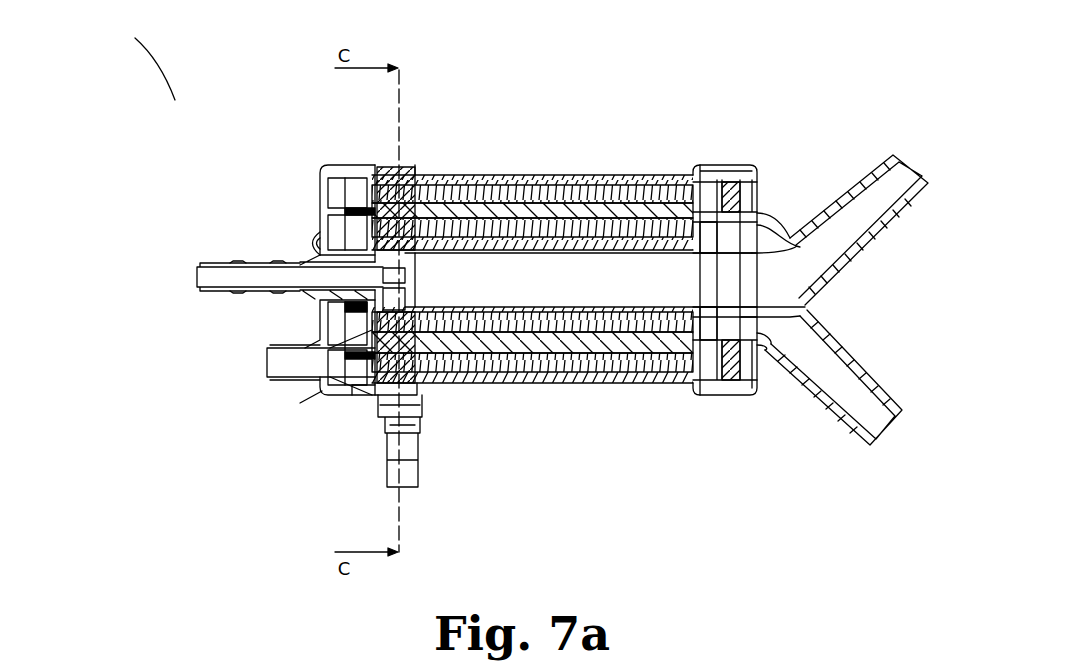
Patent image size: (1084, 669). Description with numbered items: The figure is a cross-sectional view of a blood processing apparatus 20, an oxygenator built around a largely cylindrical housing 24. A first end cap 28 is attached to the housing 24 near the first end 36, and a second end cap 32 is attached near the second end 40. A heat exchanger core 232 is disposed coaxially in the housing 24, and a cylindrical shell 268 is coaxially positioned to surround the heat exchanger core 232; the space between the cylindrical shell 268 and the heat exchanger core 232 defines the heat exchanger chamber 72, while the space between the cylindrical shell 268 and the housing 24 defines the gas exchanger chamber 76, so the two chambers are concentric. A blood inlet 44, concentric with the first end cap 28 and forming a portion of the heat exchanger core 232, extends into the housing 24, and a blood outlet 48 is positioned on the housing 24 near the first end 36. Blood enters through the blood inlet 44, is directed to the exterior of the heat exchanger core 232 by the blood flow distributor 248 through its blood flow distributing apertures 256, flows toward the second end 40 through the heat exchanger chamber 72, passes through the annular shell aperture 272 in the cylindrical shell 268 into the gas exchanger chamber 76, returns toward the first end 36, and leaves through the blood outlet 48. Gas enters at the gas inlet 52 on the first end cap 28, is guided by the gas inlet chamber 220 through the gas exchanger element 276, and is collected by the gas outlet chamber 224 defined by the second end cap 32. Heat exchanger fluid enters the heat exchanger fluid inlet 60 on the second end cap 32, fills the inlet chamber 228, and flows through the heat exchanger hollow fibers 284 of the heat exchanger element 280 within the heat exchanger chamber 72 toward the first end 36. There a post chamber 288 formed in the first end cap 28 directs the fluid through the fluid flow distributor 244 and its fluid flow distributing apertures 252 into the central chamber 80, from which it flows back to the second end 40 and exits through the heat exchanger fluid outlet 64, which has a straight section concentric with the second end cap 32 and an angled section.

The blood processing apparatus 20 is at (175, 100).
The housing 24 is at (478, 388).
The first end cap 28 is at (343, 167).
The second end cap 32 is at (730, 165).
The first end 36 is at (140, 318).
The second end 40 is at (885, 308).
The blood inlet 44 is at (200, 277).
The blood outlet 48 is at (390, 472).
The gas inlet 52 is at (268, 360).
The heat exchanger fluid inlet 60 is at (877, 411).
The heat exchanger fluid outlet 64 is at (905, 182).
The heat exchanger chamber 72 is at (563, 180).
The gas exchanger chamber 76 is at (488, 180).
The central chamber 80 is at (513, 383).
The gas inlet chamber 220 is at (318, 186).
The gas outlet chamber 224 is at (752, 182).
The inlet chamber 228 is at (724, 360).
The heat exchanger core 232 is at (503, 200).
The fluid flow distributor 244 is at (402, 215).
The blood flow distributor 248 is at (312, 382).
The fluid flow distributing apertures 252 is at (425, 215).
The blood flow distributing apertures 256 is at (375, 400).
The cylindrical shell 268 is at (570, 386).
The annular shell aperture 272 is at (670, 180).
The gas exchanger element 276 is at (612, 180).
The heat exchanger element 280 is at (588, 180).
The heat exchanger hollow fibers 284 is at (455, 386).
The post chamber 288 is at (333, 261).